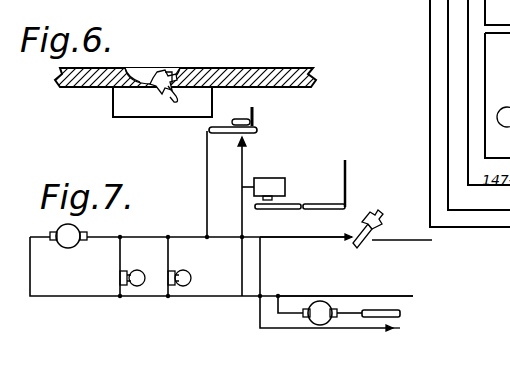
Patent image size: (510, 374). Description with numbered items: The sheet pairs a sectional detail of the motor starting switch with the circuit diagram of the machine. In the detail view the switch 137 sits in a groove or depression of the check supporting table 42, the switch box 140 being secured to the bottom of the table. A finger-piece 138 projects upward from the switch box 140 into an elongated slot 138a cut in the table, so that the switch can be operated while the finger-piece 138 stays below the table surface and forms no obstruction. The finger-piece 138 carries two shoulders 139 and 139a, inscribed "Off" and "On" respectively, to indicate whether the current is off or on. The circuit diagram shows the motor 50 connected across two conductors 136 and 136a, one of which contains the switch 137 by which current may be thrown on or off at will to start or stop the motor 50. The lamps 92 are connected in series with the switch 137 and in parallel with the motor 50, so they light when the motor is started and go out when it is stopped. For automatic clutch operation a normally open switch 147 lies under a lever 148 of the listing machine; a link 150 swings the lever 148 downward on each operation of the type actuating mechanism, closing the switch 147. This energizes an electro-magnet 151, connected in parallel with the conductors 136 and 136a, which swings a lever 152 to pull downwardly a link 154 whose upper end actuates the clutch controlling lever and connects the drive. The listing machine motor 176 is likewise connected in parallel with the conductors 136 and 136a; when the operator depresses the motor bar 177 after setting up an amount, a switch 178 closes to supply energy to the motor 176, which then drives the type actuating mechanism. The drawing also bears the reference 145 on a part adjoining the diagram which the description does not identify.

In FIG. 6, the panel 42 is at (265, 73).
In FIG. 6, the switch 137 is at (184, 72).
In FIG. 7, the switch 137 is at (361, 245).
In FIG. 6, the finger-piece 138 is at (158, 72).
In FIG. 6, the elongated slot 138a is at (150, 70).
In FIG. 6, the shoulder 139 is at (152, 90).
In FIG. 6, the shoulder 139a is at (195, 57).
In FIG. 6, the switch box 140 is at (165, 104).
In FIG. 7, the motor 50 is at (70, 242).
In FIG. 7, the lamps 92 is at (186, 270).
In FIG. 7, the conductor 136 is at (307, 241).
In FIG. 7, the conductor 136a is at (296, 297).
In FIG. 7, the element 145 is at (503, 110).
In FIG. 7, the normally open switch 147 is at (248, 137).
In FIG. 7, the lever 148 is at (259, 130).
In FIG. 7, the link 150 is at (255, 112).
In FIG. 7, the electro-magnet 151 is at (276, 186).
In FIG. 7, the lever 152 is at (318, 205).
In FIG. 7, the link 154 is at (347, 168).
In FIG. 7, the motor 176 is at (323, 309).
In FIG. 7, the motor bar 177 is at (381, 310).
In FIG. 7, the switch 178 is at (400, 322).